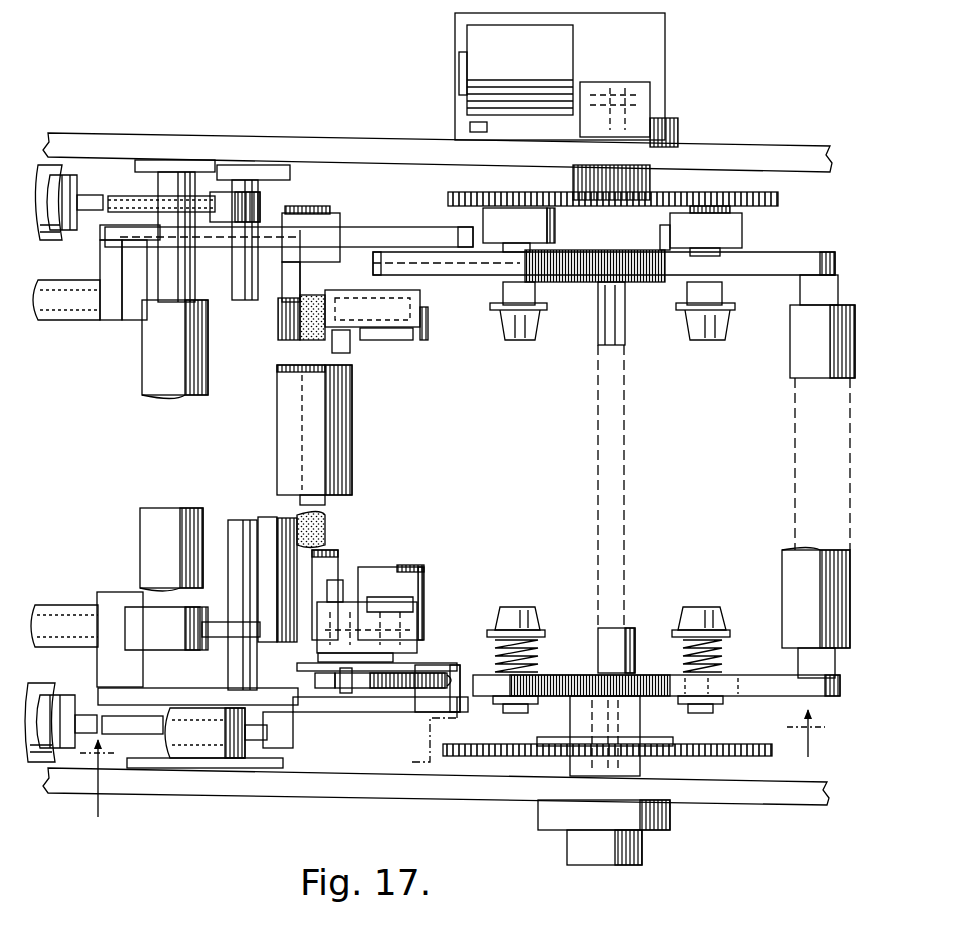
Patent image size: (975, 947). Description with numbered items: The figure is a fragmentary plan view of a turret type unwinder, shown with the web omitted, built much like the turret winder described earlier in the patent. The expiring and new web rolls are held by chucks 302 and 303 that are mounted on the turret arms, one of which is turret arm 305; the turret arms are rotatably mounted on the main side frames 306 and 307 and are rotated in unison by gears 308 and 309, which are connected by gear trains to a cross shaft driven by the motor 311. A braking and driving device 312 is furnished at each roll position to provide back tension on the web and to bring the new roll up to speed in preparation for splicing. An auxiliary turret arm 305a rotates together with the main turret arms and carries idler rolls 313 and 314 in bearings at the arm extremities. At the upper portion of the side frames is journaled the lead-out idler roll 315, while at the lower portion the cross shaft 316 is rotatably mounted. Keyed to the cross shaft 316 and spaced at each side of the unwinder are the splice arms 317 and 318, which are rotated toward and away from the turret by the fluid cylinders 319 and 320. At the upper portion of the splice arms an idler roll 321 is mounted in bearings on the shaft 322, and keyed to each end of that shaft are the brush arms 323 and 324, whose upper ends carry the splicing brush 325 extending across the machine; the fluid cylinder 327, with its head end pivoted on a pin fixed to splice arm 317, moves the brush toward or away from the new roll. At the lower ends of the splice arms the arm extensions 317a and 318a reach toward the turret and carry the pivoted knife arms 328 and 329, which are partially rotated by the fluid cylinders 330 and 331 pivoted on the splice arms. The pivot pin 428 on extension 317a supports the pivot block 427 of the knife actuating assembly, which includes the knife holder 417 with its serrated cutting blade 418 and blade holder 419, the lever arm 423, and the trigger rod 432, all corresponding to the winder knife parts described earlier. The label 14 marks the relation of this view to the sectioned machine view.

The section line 14 is at (459, 765).
The chuck 302 is at (518, 607).
The chuck 303 is at (518, 338).
The turret arm 305 is at (566, 270).
The auxiliary turret arm 305a is at (452, 268).
The main side frame 306 is at (712, 795).
The main side frame 307 is at (712, 153).
The gear 308 is at (752, 757).
The gear 309 is at (782, 200).
The motor 311 is at (487, 42).
The braking and driving device 312 is at (490, 218).
The idler roll 313 is at (788, 565).
The idler roll 314 is at (418, 568).
The lead-out idler roll 315 is at (155, 383).
The cross shaft 316 is at (232, 528).
The splice arm 317 is at (192, 696).
The arm extension 317a is at (425, 712).
The splice arm 318 is at (208, 232).
The arm extension 318a is at (385, 238).
The fluid cylinder 319 is at (38, 770).
The fluid cylinder 320 is at (55, 172).
The idler roll 321 is at (345, 433).
The shaft 322 is at (322, 504).
The brush arm 323 is at (308, 725).
The brush arm 324 is at (318, 214).
The splicing brush 325 is at (326, 520).
The fluid cylinder 327 is at (207, 745).
The knife arm 328 is at (365, 595).
The knife arm 329 is at (424, 313).
The fluid cylinder 330 is at (52, 612).
The fluid cylinder 331 is at (66, 322).
The knife holder 417 is at (430, 325).
The serrated cutting blade 418 is at (405, 340).
The blade holder 419 is at (378, 340).
The lever arm 423 is at (345, 695).
The pivot block 427 is at (432, 670).
The pivot pin 428 is at (450, 712).
The trigger rod 432 is at (405, 690).